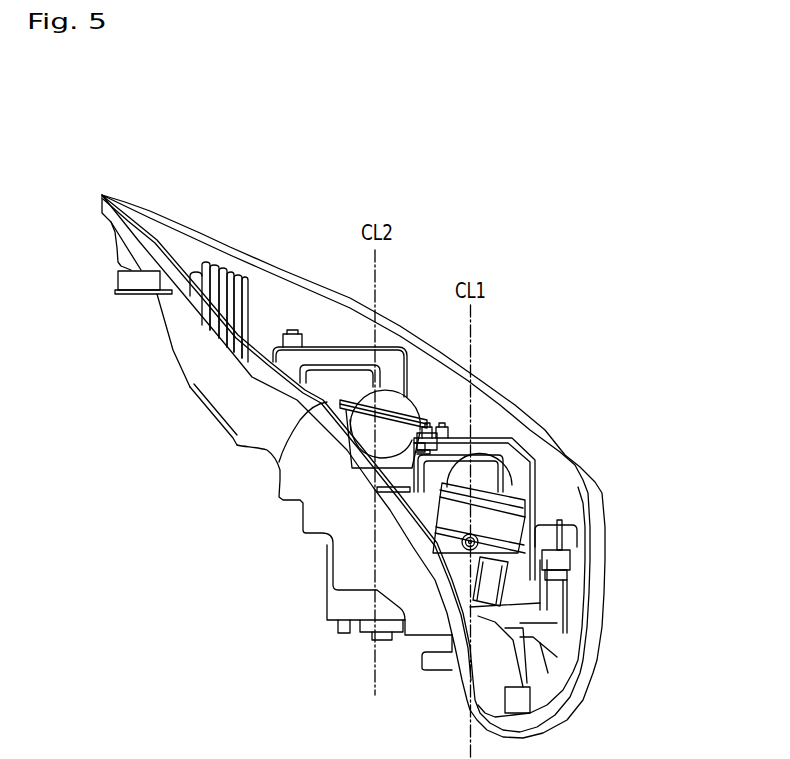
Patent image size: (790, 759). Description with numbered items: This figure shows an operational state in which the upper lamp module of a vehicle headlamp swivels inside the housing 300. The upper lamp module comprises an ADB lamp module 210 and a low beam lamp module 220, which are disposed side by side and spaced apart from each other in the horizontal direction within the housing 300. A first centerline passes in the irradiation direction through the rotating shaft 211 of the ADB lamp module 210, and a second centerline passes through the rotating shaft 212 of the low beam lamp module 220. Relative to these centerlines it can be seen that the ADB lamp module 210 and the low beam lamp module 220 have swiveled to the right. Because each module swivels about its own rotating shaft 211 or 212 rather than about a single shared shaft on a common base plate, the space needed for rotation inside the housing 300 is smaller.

The housing 300 is at (237, 246).
The ADB lamp module 210 is at (511, 481).
The rotating shaft 211 is at (496, 537).
The rotating shaft 212 is at (375, 435).
The low beam lamp module 220 is at (277, 462).